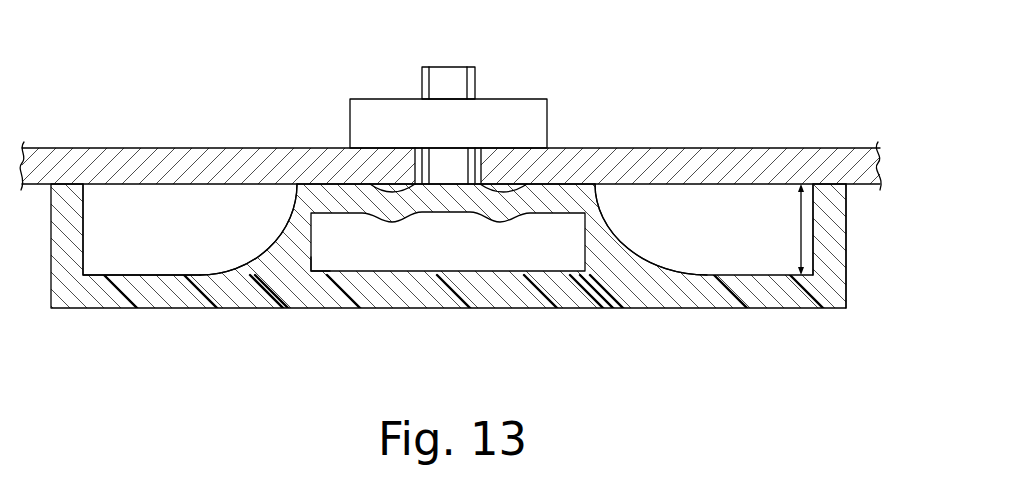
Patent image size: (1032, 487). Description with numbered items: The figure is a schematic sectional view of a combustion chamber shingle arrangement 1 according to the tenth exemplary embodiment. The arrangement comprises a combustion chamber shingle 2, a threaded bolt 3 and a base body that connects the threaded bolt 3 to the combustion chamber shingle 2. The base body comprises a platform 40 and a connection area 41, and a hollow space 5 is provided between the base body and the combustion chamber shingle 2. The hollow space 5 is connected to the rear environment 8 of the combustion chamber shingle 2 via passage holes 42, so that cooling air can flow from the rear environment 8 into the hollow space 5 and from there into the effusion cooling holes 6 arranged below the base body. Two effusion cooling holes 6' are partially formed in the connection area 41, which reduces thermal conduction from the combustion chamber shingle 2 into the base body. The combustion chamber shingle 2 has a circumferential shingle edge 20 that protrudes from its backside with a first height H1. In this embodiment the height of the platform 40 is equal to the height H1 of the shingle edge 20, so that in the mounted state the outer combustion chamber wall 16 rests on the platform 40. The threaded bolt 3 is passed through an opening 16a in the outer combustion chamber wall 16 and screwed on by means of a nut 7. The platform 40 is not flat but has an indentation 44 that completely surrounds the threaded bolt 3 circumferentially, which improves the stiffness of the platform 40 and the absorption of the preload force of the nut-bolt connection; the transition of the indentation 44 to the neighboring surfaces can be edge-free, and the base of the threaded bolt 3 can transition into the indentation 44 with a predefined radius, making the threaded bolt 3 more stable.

The combustion chamber shingle arrangement 1 is at (125, 92).
The combustion chamber shingle 2 is at (573, 290).
The threaded bolt 3 is at (450, 88).
The hollow space 5 is at (388, 253).
The effusion cooling holes 6 is at (465, 336).
The effusion cooling holes 6' is at (461, 336).
The nut 7 is at (385, 120).
The rear environment 8 is at (138, 245).
The outer combustion chamber wall 16 is at (720, 178).
The opening 16a is at (416, 166).
The shingle edge 20 is at (823, 258).
The platform 40 is at (551, 203).
The connection area 41 is at (607, 245).
The passage holes 42 is at (317, 258).
The indentation 44 is at (390, 191).
The first height H1 is at (803, 203).